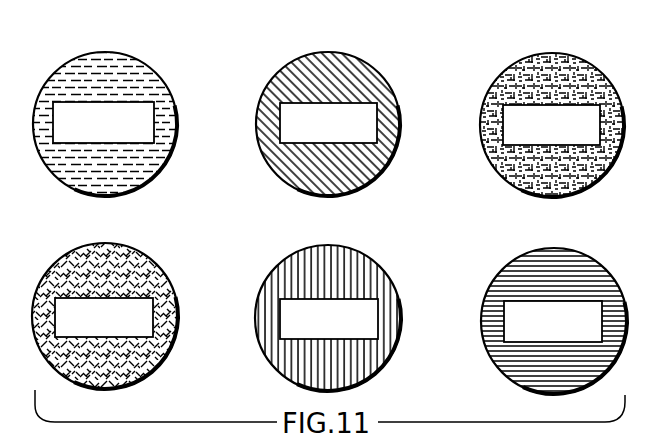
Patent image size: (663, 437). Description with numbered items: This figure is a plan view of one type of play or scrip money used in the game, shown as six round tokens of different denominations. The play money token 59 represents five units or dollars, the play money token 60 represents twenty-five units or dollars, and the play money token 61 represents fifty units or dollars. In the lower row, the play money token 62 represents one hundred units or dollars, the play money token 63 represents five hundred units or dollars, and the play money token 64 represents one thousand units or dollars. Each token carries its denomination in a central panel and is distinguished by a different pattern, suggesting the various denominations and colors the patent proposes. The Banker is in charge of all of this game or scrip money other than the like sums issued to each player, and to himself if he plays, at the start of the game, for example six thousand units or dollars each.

The play money token 59 is at (147, 80).
The play money token 60 is at (368, 85).
The play money token 61 is at (598, 83).
The play money token 62 is at (148, 273).
The play money token 63 is at (367, 282).
The play money token 64 is at (593, 283).